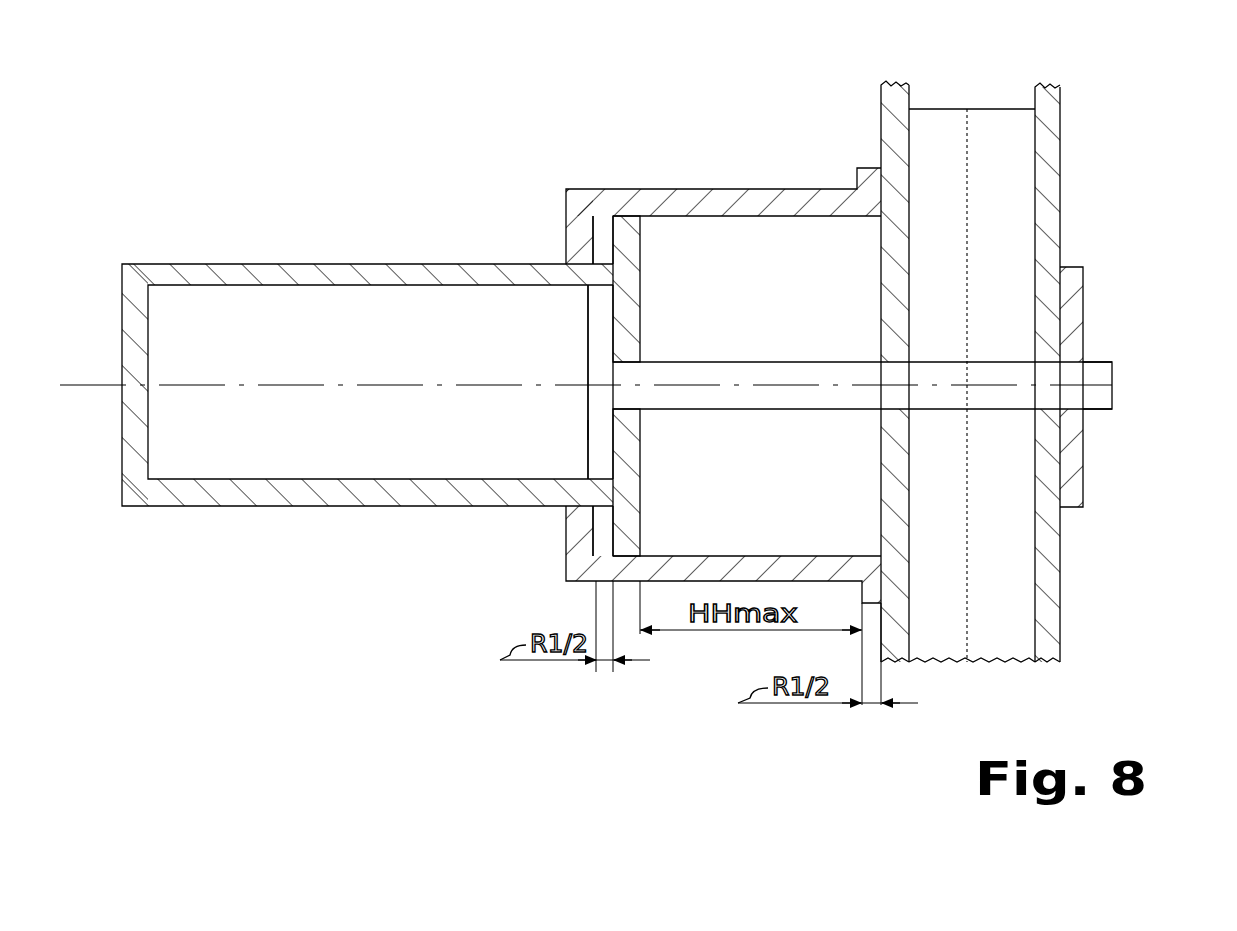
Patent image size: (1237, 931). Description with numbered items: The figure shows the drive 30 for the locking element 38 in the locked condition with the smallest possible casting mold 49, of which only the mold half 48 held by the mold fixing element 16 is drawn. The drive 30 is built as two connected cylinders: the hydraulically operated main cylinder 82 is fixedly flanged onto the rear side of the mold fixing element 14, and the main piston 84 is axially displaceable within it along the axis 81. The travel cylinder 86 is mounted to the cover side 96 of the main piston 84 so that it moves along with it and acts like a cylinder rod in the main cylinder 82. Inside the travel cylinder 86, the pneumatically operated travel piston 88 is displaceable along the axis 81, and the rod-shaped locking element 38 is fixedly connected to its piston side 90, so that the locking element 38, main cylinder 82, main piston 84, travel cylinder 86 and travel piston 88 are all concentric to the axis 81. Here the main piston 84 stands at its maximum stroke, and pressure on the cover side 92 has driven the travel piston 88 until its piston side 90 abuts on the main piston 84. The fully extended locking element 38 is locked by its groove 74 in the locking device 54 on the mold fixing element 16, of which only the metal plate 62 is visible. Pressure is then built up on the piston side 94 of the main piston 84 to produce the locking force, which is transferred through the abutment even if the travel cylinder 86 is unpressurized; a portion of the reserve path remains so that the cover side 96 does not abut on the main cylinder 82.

The drive 30 is at (472, 175).
The mold fixing element 14 is at (893, 97).
The mold half 48 is at (923, 120).
The mold fixing element 16 is at (1048, 97).
The casting mold 49 is at (982, 251).
The main piston 84 is at (622, 232).
The main cylinder 82 is at (806, 203).
The travel cylinder 86 is at (375, 272).
The travel piston 88 is at (595, 323).
The piston side 90 is at (625, 330).
The metal plate 62 is at (1072, 284).
The axis 81 is at (470, 386).
The cover side 92 is at (588, 428).
The locking element 38 is at (808, 400).
The groove 74 is at (1073, 378).
The piston side 94 is at (641, 488).
The locking device 54 is at (1112, 446).
The cover side 96 is at (612, 530).